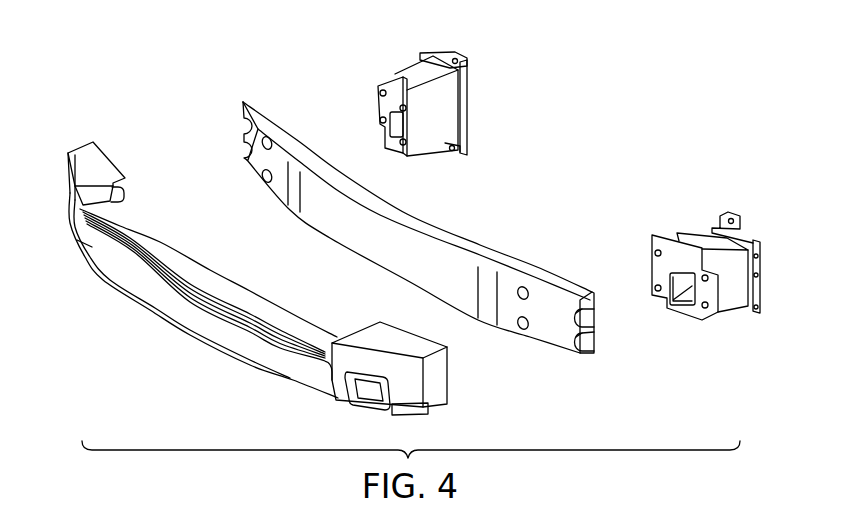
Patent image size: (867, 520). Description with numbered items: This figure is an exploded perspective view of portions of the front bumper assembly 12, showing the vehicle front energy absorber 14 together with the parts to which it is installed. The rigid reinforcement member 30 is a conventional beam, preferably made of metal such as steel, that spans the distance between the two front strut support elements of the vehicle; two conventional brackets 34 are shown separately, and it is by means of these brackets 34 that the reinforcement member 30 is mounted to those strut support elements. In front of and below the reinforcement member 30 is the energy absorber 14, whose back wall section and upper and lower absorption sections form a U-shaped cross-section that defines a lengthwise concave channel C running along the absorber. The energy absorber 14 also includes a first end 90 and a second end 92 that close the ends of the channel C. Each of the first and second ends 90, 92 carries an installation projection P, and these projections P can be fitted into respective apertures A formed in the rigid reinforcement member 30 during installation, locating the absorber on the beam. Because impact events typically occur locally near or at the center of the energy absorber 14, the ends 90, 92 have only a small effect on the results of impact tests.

The front bumper assembly 12 is at (154, 44).
The energy absorber 14 is at (213, 285).
The reinforcement member 30 is at (424, 230).
The brackets 34 is at (415, 80).
The first end 90 is at (92, 163).
The second end 92 is at (432, 378).
The apertures A is at (262, 149).
The channel C is at (220, 333).
The installation projection P is at (124, 193).